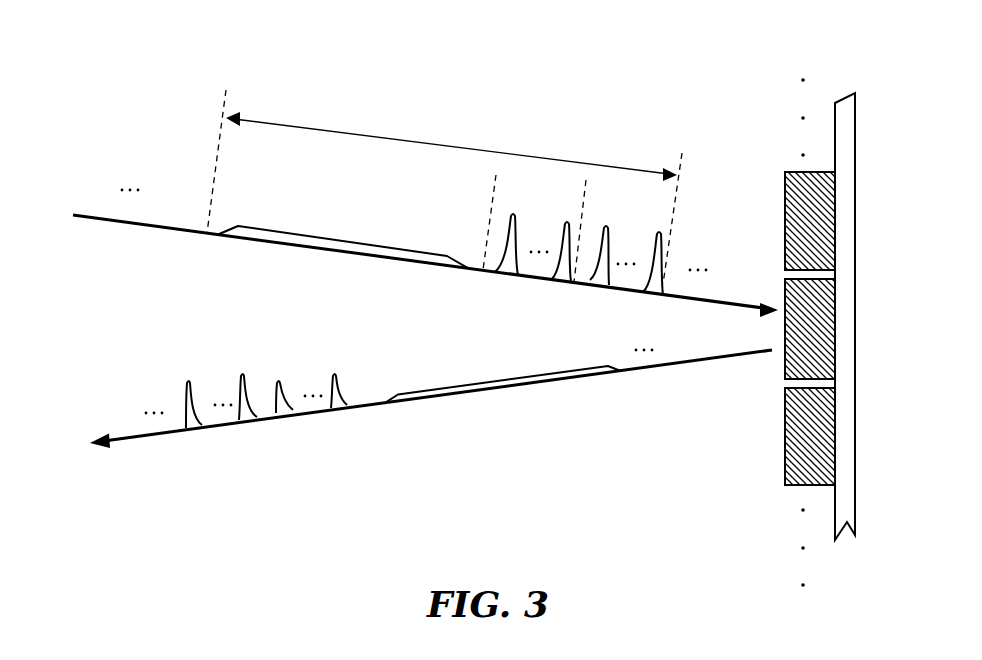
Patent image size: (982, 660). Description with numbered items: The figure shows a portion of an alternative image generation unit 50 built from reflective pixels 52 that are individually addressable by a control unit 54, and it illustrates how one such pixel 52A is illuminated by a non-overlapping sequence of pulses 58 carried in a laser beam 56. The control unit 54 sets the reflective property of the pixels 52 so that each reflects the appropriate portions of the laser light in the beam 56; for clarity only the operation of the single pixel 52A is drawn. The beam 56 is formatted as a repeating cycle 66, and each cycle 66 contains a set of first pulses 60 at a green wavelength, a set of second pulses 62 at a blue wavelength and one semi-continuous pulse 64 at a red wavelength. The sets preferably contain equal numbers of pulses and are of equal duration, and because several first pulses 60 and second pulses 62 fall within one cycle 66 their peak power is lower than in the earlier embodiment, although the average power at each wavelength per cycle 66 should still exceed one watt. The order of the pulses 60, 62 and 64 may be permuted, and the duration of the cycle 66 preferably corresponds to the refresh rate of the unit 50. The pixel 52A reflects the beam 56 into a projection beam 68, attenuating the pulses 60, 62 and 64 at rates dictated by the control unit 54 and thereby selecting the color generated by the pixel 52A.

The image generation unit 50 is at (755, 93).
The reflective pixels 52 is at (747, 328).
The pixel 52A is at (783, 296).
The control unit 54 is at (840, 92).
The beam 56 is at (160, 227).
The non-overlapping sequence of pulses 58 is at (402, 102).
The first pulses 60 is at (653, 240).
The second pulses 62 is at (562, 223).
The semi-continuous pulse 64 is at (367, 240).
The cycle 66 is at (282, 118).
The projection beam 68 is at (158, 437).